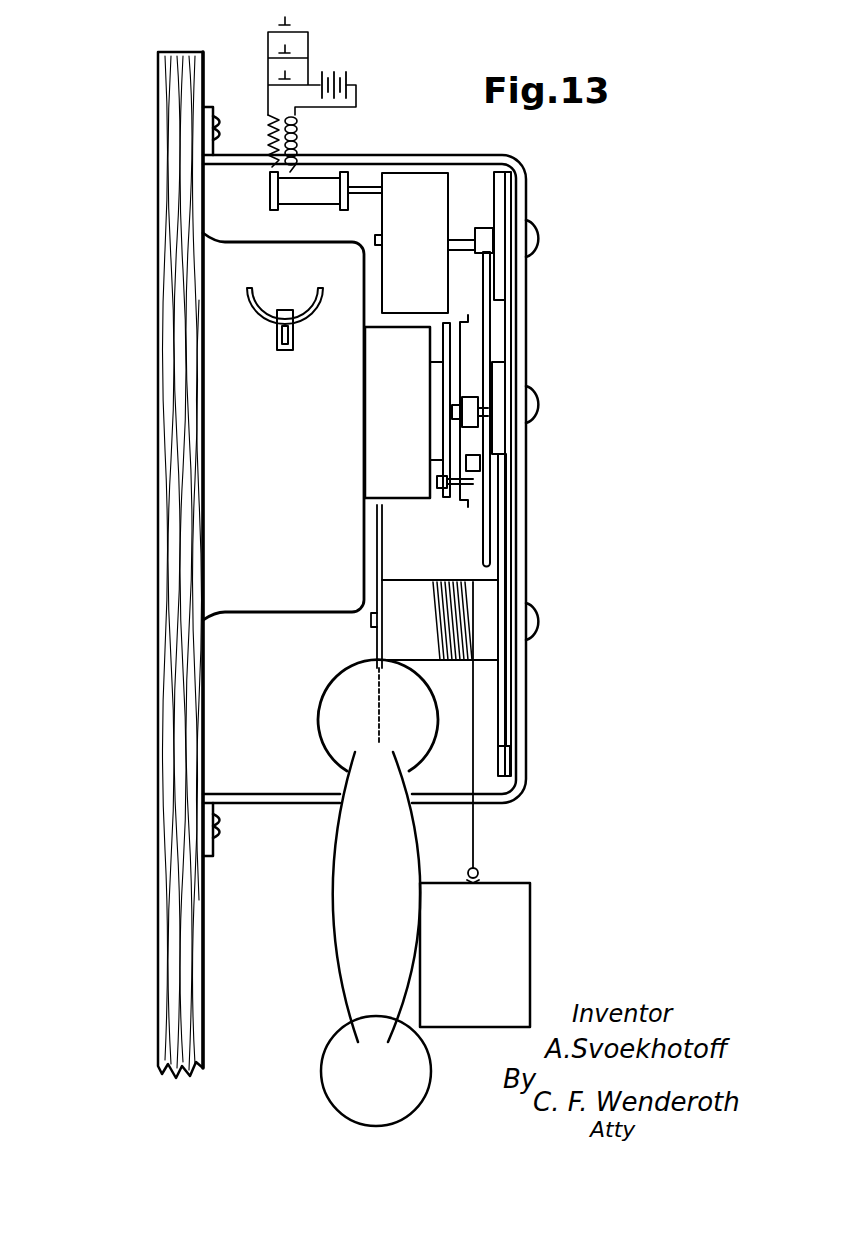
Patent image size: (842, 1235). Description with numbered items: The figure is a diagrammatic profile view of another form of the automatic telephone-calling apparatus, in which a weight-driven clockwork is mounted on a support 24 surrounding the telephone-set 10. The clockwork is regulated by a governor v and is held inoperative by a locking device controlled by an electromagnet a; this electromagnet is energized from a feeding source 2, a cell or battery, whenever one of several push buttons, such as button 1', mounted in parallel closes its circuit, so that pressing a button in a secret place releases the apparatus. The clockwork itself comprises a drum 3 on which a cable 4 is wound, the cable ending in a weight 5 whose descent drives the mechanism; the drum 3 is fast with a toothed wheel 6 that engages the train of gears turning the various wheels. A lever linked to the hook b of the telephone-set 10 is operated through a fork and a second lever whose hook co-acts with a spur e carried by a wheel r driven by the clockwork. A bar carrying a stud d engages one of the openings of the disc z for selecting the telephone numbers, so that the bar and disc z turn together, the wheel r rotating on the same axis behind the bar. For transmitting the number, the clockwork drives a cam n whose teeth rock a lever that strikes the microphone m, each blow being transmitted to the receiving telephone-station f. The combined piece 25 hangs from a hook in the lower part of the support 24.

The button 1' is at (253, 19).
The feeding source 2 is at (345, 80).
The electromagnet a is at (312, 187).
The governor v is at (411, 243).
The telephone-set 10 is at (240, 558).
The hook b is at (246, 302).
The wheel r is at (487, 331).
The disc for the selection of the telephone-numbers z is at (446, 356).
The spur e is at (476, 463).
The stud d is at (448, 481).
The receiving telephone-station f is at (503, 522).
The cam n is at (383, 549).
The drum 3 is at (488, 601).
The microphone m is at (410, 705).
The support 24 is at (523, 766).
The toothed wheel 6 is at (510, 775).
The cable 4 is at (478, 836).
The weight 5 is at (515, 951).
The combined piece 25 is at (358, 895).